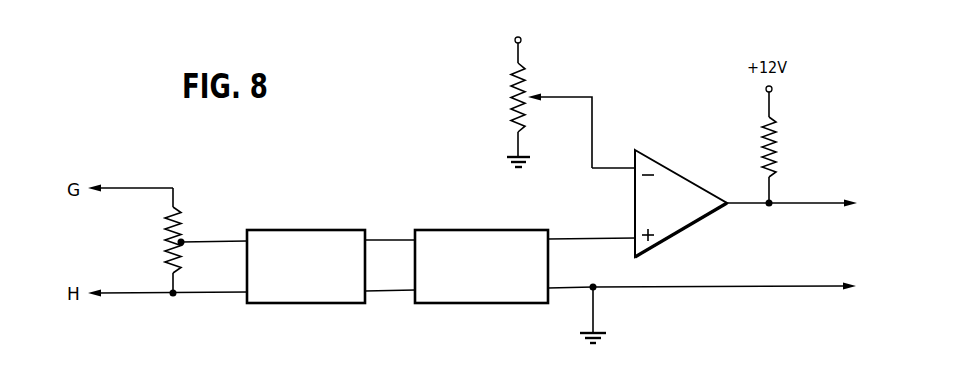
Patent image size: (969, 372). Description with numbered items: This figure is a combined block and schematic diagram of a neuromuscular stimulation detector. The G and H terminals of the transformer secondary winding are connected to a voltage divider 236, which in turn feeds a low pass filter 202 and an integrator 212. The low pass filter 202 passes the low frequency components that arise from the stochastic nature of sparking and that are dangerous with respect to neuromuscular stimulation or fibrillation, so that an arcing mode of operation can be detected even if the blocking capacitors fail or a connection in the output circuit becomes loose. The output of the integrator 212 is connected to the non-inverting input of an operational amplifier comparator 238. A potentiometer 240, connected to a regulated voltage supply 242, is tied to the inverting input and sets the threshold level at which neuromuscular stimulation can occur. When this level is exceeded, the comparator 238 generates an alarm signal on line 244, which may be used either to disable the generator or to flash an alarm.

The voltage divider 236 is at (177, 218).
The low pass filter 202 is at (332, 237).
The integrator 212 is at (448, 237).
The operational amplifier comparator 238 is at (678, 193).
The potentiometer 240 is at (512, 88).
The regulated voltage supply 242 is at (515, 40).
The line 244 is at (817, 199).